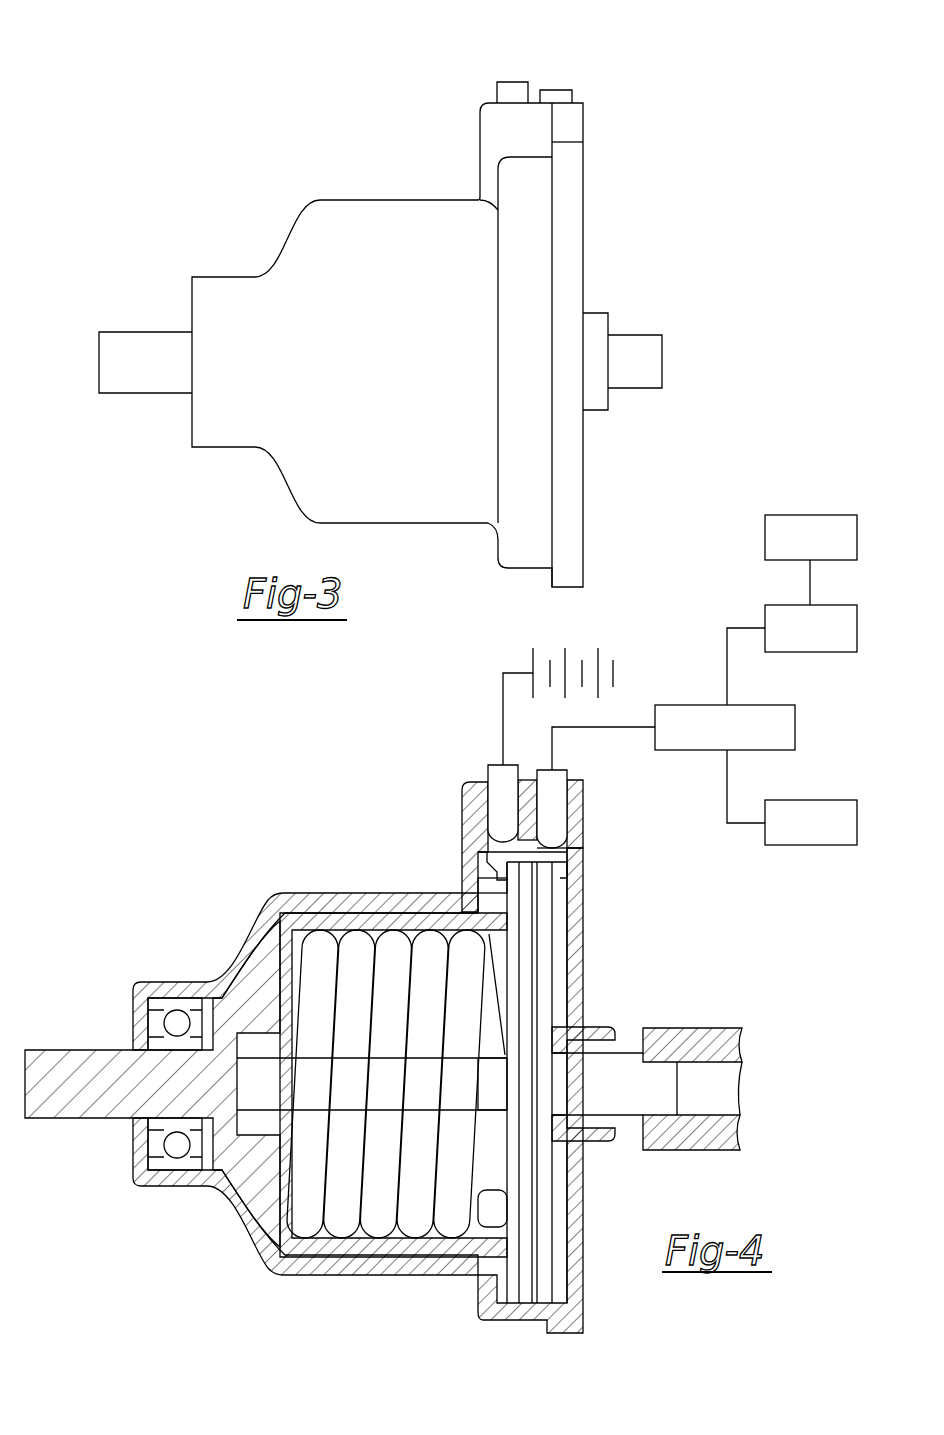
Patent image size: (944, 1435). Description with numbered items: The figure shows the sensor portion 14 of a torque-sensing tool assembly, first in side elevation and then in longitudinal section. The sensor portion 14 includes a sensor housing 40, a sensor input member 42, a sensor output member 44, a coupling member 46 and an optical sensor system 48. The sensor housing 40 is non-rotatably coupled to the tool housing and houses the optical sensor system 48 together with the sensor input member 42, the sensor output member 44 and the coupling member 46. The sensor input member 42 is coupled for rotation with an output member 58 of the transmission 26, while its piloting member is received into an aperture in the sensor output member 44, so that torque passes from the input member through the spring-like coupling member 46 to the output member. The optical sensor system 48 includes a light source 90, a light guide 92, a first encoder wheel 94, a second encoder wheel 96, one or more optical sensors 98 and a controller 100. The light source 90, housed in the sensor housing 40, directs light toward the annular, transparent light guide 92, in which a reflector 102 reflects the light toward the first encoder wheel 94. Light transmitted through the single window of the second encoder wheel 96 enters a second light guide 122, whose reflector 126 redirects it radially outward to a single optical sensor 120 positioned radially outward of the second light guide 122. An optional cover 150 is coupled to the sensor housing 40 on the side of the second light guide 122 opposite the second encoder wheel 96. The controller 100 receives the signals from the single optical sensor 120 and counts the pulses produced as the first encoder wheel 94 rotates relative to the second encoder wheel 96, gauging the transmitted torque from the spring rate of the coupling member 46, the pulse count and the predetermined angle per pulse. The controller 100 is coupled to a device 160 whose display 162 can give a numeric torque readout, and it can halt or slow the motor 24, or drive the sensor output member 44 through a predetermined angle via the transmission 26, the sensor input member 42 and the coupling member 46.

In FIG. 3, the sensor portion 14 is at (598, 84).
In FIG. 4, the sensor portion 14 is at (605, 808).
In FIG. 4, the motor 24 is at (812, 800).
In FIG. 4, the transmission 26 is at (724, 1075).
In FIG. 3, the sensor housing 40 is at (288, 470).
In FIG. 4, the sensor housing 40 is at (350, 1265).
In FIG. 3, the sensor input member 42 is at (632, 352).
In FIG. 4, the sensor input member 42 is at (633, 1100).
In FIG. 3, the sensor output member 44 is at (140, 345).
In FIG. 4, the sensor output member 44 is at (92, 1052).
In FIG. 4, the coupling member 46 is at (318, 950).
In FIG. 3, the optical sensor system 48 is at (527, 66).
In FIG. 4, the optical sensor system 48 is at (486, 748).
In FIG. 4, the output member 58 is at (725, 1133).
In FIG. 4, the light source 90 is at (497, 790).
In FIG. 4, the light guide 92 is at (490, 858).
In FIG. 4, the first encoder wheel 94 is at (528, 1000).
In FIG. 4, the second encoder wheel 96 is at (545, 905).
In FIG. 4, the optical sensors 98 is at (555, 785).
In FIG. 4, the controller 100 is at (707, 703).
In FIG. 4, the reflector 102 is at (492, 880).
In FIG. 4, the single optical sensor 120 is at (560, 825).
In FIG. 4, the second light guide 122 is at (560, 945).
In FIG. 4, the reflector 126 is at (592, 866).
In FIG. 4, the cover 150 is at (578, 1262).
In FIG. 4, the device 160 is at (790, 605).
In FIG. 4, the display 162 is at (810, 513).